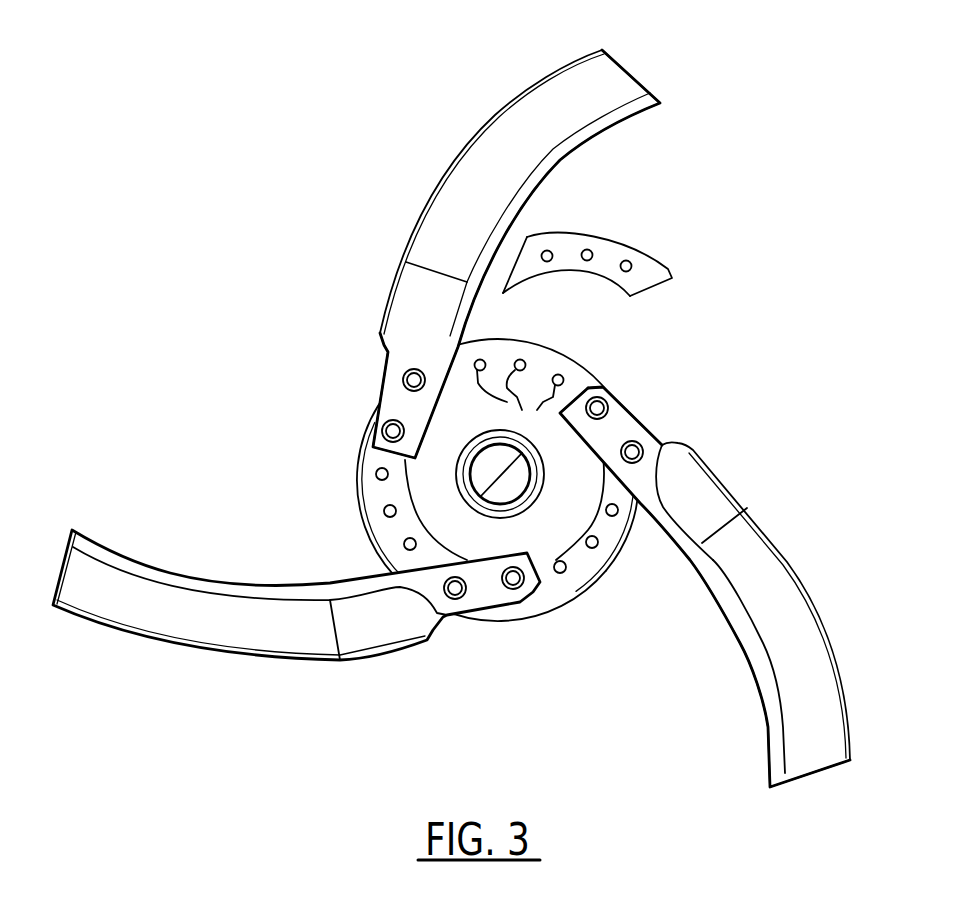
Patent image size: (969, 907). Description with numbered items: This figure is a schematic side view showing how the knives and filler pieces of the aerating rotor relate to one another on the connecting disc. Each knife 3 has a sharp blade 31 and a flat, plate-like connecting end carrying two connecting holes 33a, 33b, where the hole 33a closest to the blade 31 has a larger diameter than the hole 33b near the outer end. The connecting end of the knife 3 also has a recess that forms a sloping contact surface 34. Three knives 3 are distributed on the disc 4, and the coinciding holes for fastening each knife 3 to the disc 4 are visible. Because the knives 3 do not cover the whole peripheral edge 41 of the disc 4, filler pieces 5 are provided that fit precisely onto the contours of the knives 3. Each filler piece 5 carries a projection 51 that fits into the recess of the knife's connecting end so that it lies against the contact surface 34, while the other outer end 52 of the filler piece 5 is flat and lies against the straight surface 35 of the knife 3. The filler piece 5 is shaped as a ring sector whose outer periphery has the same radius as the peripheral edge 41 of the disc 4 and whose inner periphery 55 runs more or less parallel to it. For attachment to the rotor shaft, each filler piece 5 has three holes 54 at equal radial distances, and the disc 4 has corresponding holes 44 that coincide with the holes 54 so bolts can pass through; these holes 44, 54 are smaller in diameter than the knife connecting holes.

The knife 3 is at (424, 114).
The disc 4 is at (540, 518).
The filler piece 5 is at (387, 532).
The blade 31 is at (560, 113).
The connecting hole 33a is at (405, 380).
The connecting hole 33b is at (385, 428).
The sloping contact surface 34 is at (607, 385).
The straight surface 35 is at (465, 410).
The peripheral edge 41 is at (590, 365).
The holes 44 is at (519, 398).
The projection 51 is at (670, 272).
The outer end 52 is at (510, 273).
The holes 54 is at (560, 250).
The inner periphery 55 is at (600, 284).